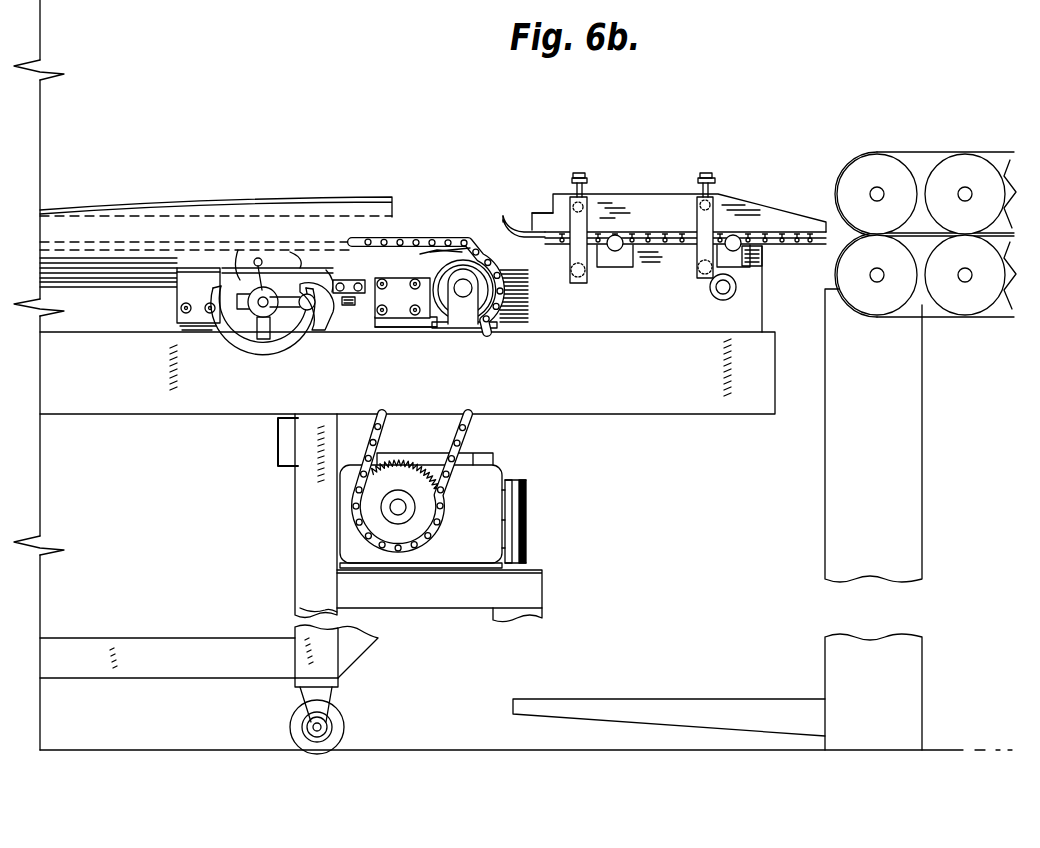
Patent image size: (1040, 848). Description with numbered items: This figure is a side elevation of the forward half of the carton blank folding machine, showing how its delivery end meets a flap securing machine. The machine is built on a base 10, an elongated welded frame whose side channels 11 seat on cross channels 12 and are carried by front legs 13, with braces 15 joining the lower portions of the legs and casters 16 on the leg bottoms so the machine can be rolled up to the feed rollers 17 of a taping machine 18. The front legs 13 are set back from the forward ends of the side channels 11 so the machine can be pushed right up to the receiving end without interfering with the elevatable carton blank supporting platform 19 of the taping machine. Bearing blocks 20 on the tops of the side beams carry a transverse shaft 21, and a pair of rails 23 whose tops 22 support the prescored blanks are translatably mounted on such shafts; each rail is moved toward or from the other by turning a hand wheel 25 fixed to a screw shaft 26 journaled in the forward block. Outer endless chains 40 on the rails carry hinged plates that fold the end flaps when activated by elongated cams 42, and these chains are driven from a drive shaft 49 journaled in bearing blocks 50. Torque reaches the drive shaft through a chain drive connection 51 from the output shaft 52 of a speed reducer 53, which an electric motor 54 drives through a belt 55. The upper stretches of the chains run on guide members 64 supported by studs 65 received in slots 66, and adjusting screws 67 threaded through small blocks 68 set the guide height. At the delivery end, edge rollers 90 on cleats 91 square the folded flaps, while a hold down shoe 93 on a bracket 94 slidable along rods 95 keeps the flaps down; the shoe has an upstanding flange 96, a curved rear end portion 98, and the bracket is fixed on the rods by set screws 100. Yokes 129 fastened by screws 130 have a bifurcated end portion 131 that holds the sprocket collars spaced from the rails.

The base 10 is at (373, 148).
The side channels 11 is at (711, 400).
The cross channels 12 is at (276, 463).
The front legs 13 is at (307, 548).
The braces 15 is at (196, 648).
The casters 16 is at (342, 720).
The feed rollers 17 is at (862, 172).
The taping machine 18 is at (918, 223).
The carton blank supporting platform 19 is at (704, 705).
The bearing or supporting blocks 20 is at (327, 323).
The shaft 21 is at (316, 308).
The tops of rails 22 is at (472, 248).
The rails 23 is at (606, 316).
The hand wheel 25 is at (241, 345).
The screw shafts 26 is at (261, 302).
The second pair of endless chains 40 is at (391, 240).
The elongated cams 42 is at (163, 208).
The drive shaft 49 is at (460, 287).
The bearing blocks 50 is at (505, 318).
The chain drive connection 51 is at (467, 436).
The output shaft 52 is at (407, 510).
The speed reducer 53 is at (493, 475).
The electric motor 54 is at (422, 457).
The belt 55 is at (518, 523).
The guide members 64 is at (297, 250).
The studs 65 is at (261, 258).
The slots 66 is at (248, 250).
The adjusting screws 67 is at (332, 276).
The small blocks 68 is at (334, 312).
The edge rollers 90 is at (657, 232).
The cleats 91 is at (787, 242).
The hold down shoe 93 is at (506, 212).
The bracket 94 is at (609, 203).
The rods 95 is at (595, 202).
The upstanding flange 96 is at (538, 211).
The curved rear end portion 98 is at (520, 241).
The set screws 100 is at (576, 172).
The yokes 129 is at (397, 312).
The screws 130 is at (378, 287).
The bifurcated end portion 131 is at (438, 257).